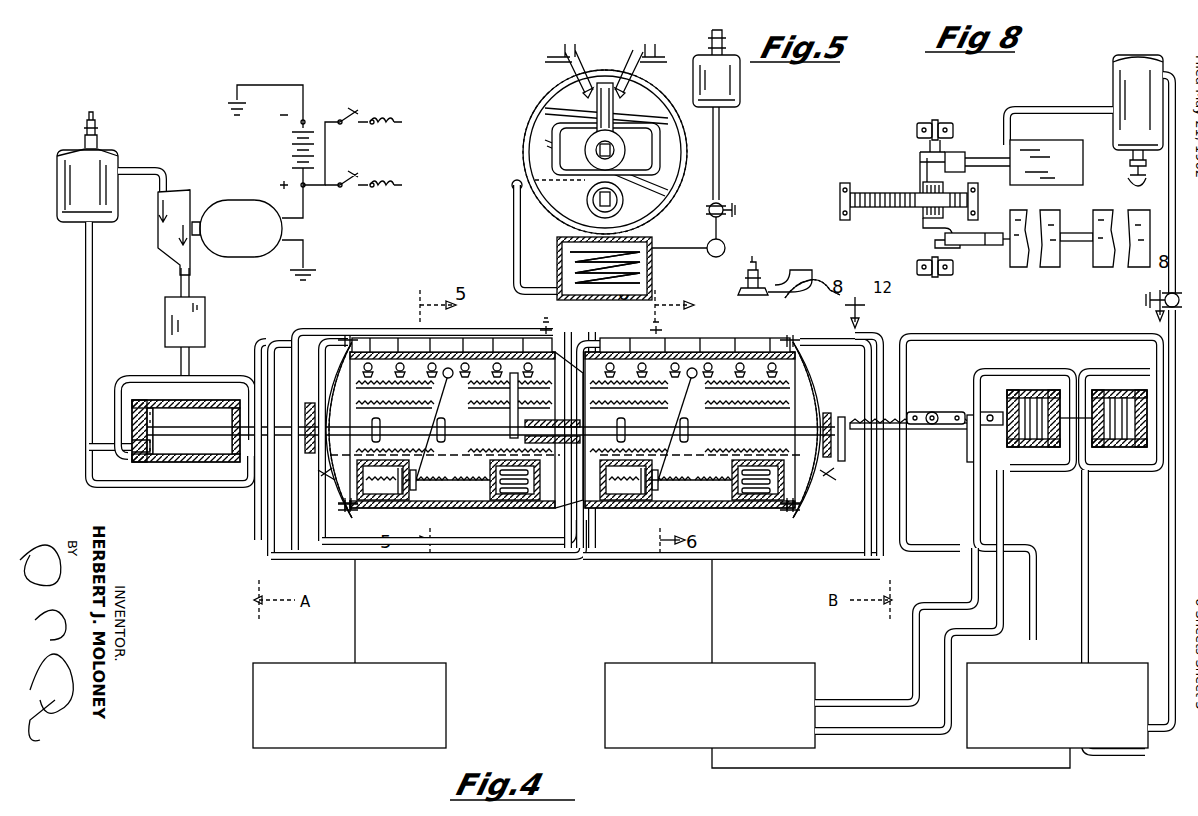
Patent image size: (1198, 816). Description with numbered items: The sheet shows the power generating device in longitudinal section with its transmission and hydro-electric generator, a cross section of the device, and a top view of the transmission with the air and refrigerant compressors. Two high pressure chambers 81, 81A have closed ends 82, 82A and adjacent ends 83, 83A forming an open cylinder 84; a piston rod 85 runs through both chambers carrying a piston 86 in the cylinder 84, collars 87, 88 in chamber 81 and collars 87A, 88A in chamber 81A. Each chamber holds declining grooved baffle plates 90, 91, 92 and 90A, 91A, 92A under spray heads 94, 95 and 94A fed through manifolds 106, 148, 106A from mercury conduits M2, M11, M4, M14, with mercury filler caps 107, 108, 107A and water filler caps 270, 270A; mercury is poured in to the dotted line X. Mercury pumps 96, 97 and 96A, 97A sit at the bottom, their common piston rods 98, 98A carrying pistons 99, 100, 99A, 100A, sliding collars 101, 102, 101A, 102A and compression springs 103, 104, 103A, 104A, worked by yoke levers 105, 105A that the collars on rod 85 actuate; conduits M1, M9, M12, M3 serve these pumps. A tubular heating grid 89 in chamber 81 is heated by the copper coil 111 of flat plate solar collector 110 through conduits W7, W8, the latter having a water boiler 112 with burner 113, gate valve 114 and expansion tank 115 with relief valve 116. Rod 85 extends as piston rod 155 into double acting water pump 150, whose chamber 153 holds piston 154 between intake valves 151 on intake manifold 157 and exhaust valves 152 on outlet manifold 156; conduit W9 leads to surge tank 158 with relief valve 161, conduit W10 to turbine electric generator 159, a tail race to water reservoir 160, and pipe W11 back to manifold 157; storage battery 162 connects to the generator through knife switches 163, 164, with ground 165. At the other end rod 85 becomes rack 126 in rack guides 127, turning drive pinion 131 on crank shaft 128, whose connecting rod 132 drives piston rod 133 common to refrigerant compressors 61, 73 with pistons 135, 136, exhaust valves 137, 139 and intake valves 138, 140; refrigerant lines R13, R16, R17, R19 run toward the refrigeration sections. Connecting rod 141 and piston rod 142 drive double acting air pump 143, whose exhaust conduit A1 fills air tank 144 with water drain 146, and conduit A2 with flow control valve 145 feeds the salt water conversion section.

In FIG. 4, the surge tank 158 is at (60, 178).
In FIG. 4, the pressure relief valve 161 is at (93, 127).
In FIG. 4, the conduit W10 is at (143, 158).
In FIG. 4, the turbine electric generator 159 is at (192, 200).
In FIG. 4, the storage battery 162 is at (292, 155).
In FIG. 4, the knife switch 164 is at (357, 125).
In FIG. 4, the knife switch 163 is at (357, 188).
In FIG. 4, the ground 165 is at (312, 270).
In FIG. 4, the water reservoir 160 is at (194, 310).
In FIG. 4, the conduit W9 is at (85, 302).
In FIG. 4, the pipe W11 is at (188, 360).
In FIG. 4, the intake manifold 157 is at (143, 380).
In FIG. 4, the outlet manifold 156 is at (188, 486).
In FIG. 4, the double acting water pump 150 is at (200, 461).
In FIG. 4, the intake valves 151 is at (140, 404).
In FIG. 4, the exhaust valves 152 is at (232, 454).
In FIG. 4, the pump chamber 153 is at (178, 463).
In FIG. 4, the piston 154 is at (135, 455).
In FIG. 4, the piston rod 155 is at (260, 342).
In FIG. 4, the conduit M11 is at (275, 340).
In FIG. 5, the conduit M11 is at (665, 58).
In FIG. 4, the conduit M1 is at (303, 560).
In FIG. 4, the mercury conduit M2 is at (310, 330).
In FIG. 5, the mercury conduit M2 is at (560, 58).
In FIG. 4, the conduit M9 is at (555, 545).
In FIG. 4, the water filler cap 270 is at (563, 333).
In FIG. 4, the water filler cap 270A is at (592, 340).
In FIG. 4, the conduit M12 is at (590, 566).
In FIG. 4, the conduit M4 is at (853, 342).
In FIG. 4, the conduit M3 is at (815, 478).
In FIG. 4, the conduit M14 is at (900, 340).
In FIG. 4, the spray heads 94 is at (525, 355).
In FIG. 5, the spray heads 94 is at (568, 95).
In FIG. 4, the high pressure chamber 81 is at (378, 345).
In FIG. 5, the high pressure chamber 81 is at (555, 200).
In FIG. 4, the manifold 106 is at (416, 342).
In FIG. 5, the manifold 106 is at (578, 56).
In FIG. 4, the mercury filler cap 107 is at (540, 328).
In FIG. 5, the mercury filler cap 107 is at (575, 55).
In FIG. 4, the closed end 82 is at (360, 373).
In FIG. 4, the baffle plate 90 is at (388, 384).
In FIG. 5, the baffle plate 90 is at (545, 106).
In FIG. 4, the baffle plate 91 is at (347, 400).
In FIG. 5, the baffle plate 91 is at (555, 143).
In FIG. 4, the baffle plate 92 is at (410, 450).
In FIG. 5, the baffle plate 92 is at (532, 183).
In FIG. 4, the yoke lever 105 is at (453, 428).
In FIG. 5, the yoke lever 105 is at (520, 193).
In FIG. 4, the collar 88 is at (375, 418).
In FIG. 4, the piston rod 85 is at (447, 420).
In FIG. 4, the collar 87 is at (440, 426).
In FIG. 4, the end 83 is at (500, 412).
In FIG. 4, the piston 86 is at (519, 405).
In FIG. 4, the open cylinder 84 is at (571, 418).
In FIG. 4, the mercury pump 96 is at (385, 500).
In FIG. 4, the piston rod 98 is at (465, 500).
In FIG. 4, the collar 101 is at (420, 500).
In FIG. 4, the collar 102 is at (450, 500).
In FIG. 4, the mercury pump 97 is at (515, 500).
In FIG. 5, the mercury pump 97 is at (625, 205).
In FIG. 4, the compression spring 104 is at (469, 457).
In FIG. 4, the piston 100 is at (492, 500).
In FIG. 4, the compression coil spring 103 is at (348, 512).
In FIG. 4, the piston 99 is at (319, 476).
In FIG. 4, the spray heads 94A is at (798, 348).
In FIG. 4, the high pressure chamber 81A is at (733, 352).
In FIG. 4, the manifold 106A is at (755, 338).
In FIG. 4, the mercury filler cap 107A is at (664, 328).
In FIG. 4, the closed end 82A is at (780, 372).
In FIG. 4, the baffle plate 90A is at (816, 386).
In FIG. 4, the baffle plate 91A is at (800, 410).
In FIG. 4, the baffle plate 92A is at (695, 450).
In FIG. 4, the yoke lever 105A is at (683, 405).
In FIG. 4, the collar 87A is at (625, 422).
In FIG. 4, the collar 88A is at (688, 422).
In FIG. 4, the collar 101A is at (662, 500).
In FIG. 4, the mercury pump 96A is at (625, 500).
In FIG. 4, the pump piston rod 98A is at (690, 493).
In FIG. 4, the collar 102A is at (705, 500).
In FIG. 4, the mercury pump 97A is at (757, 500).
In FIG. 4, the piston 100A is at (745, 500).
In FIG. 4, the compression spring 104A is at (735, 500).
In FIG. 4, the piston 99A is at (598, 565).
In FIG. 4, the compression spring 103A is at (650, 500).
In FIG. 4, the end 83A is at (600, 360).
In FIG. 4, the dotted line X is at (597, 439).
In FIG. 4, the rack 126 is at (928, 432).
In FIG. 8, the rack 126 is at (900, 210).
In FIG. 4, the crank shaft 128 is at (920, 411).
In FIG. 8, the crank shaft 128 is at (915, 130).
In FIG. 4, the connecting rod 132 is at (940, 411).
In FIG. 8, the connecting rod 132 is at (980, 244).
In FIG. 4, the drive pinion 131 is at (950, 398).
In FIG. 8, the drive pinion 131 is at (921, 185).
In FIG. 4, the rack guides 127 is at (965, 463).
In FIG. 8, the rack guides 127 is at (845, 220).
In FIG. 4, the refrigerant line R19 is at (968, 338).
In FIG. 4, the refrigerant line R17 is at (1088, 597).
In FIG. 4, the intake valves 138 is at (1025, 388).
In FIG. 4, the refrigerant compressor 61 is at (1030, 398).
In FIG. 8, the refrigerant compressor 61 is at (1025, 268).
In FIG. 4, the exhaust valves 137 is at (1012, 448).
In FIG. 4, the piston 135 is at (1040, 448).
In FIG. 4, the intake valves 140 is at (1107, 388).
In FIG. 4, the second refrigerant compressor 73 is at (1118, 398).
In FIG. 8, the second refrigerant compressor 73 is at (1106, 267).
In FIG. 4, the exhaust valves 139 is at (1097, 448).
In FIG. 4, the piston 136 is at (1130, 448).
In FIG. 8, the piston rod 133 is at (1008, 270).
In FIG. 4, the refrigerant line R13 is at (910, 645).
In FIG. 4, the refrigerant line R16 is at (1010, 621).
In FIG. 8, the conduit A2 is at (1170, 195).
In FIG. 8, the conduit A1 is at (1016, 110).
In FIG. 8, the air tank 144 is at (1110, 81).
In FIG. 8, the water drain 146 is at (1130, 173).
In FIG. 8, the flow control valve 145 is at (1151, 306).
In FIG. 8, the double acting air pump 143 is at (1028, 142).
In FIG. 8, the air pump piston rod 142 is at (953, 157).
In FIG. 8, the connecting rod 141 is at (935, 143).
In FIG. 5, the mercury filler cap 108 is at (643, 57).
In FIG. 5, the manifold 148 is at (610, 60).
In FIG. 5, the spray heads 95 is at (645, 95).
In FIG. 5, the tubular heating grid 89 is at (657, 160).
In FIG. 5, the conduit W7 is at (508, 238).
In FIG. 5, the conduit W8 is at (720, 140).
In FIG. 5, the flat plate solar heat collector 110 is at (652, 280).
In FIG. 5, the copper coil 111 is at (563, 256).
In FIG. 5, the expansion tank 115 is at (742, 92).
In FIG. 5, the pressure relief valve 116 is at (722, 34).
In FIG. 5, the gate valve 114 is at (735, 205).
In FIG. 5, the small water boiler 112 is at (725, 244).
In FIG. 5, the burner 113 is at (738, 293).